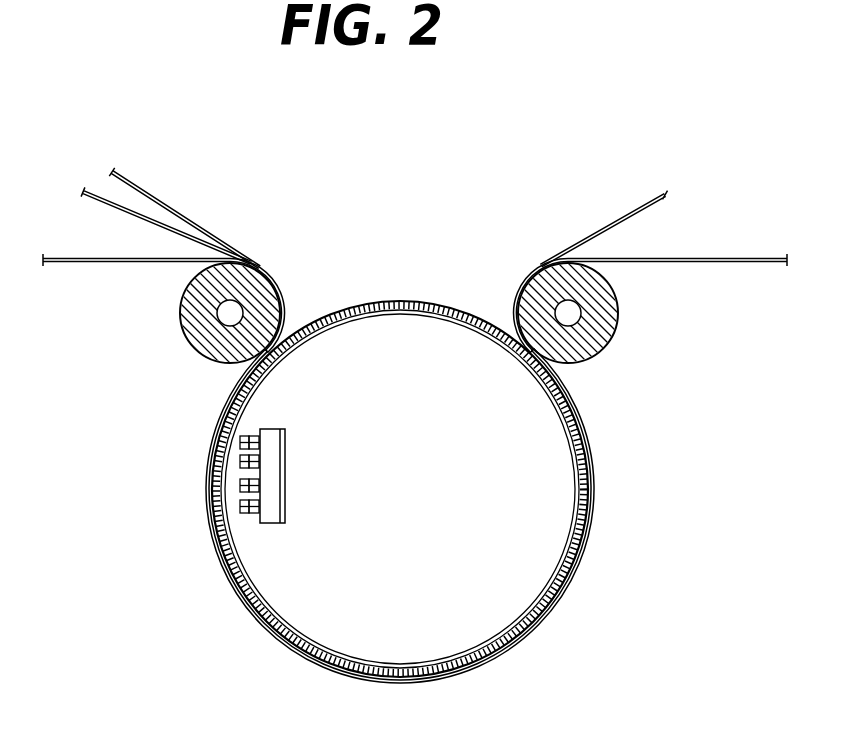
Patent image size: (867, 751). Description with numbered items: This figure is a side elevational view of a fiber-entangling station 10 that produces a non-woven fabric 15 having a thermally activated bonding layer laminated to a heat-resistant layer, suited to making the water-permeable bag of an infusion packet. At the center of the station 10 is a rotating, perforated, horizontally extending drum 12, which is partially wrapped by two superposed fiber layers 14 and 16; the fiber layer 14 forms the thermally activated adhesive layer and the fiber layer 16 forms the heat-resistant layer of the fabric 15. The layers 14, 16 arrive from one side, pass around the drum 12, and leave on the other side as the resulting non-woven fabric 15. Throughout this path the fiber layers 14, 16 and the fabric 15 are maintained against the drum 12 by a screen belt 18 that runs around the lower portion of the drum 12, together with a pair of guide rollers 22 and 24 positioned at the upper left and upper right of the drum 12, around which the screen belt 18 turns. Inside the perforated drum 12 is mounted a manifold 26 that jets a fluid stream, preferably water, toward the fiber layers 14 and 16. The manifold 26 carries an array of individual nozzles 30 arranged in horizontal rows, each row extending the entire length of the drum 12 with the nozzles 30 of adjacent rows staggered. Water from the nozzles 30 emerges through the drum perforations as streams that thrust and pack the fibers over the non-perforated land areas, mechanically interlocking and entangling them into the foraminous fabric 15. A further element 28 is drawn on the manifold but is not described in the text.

The fiber-entangling station 10 is at (360, 254).
The drum 12 is at (402, 300).
The fiber layer 14 is at (195, 228).
The non-woven fabric 15 is at (587, 233).
The fiber layer 16 is at (92, 197).
The screen belt 18 is at (125, 263).
The guide roller 22 is at (603, 335).
The guide roller 24 is at (193, 338).
The manifold 26 is at (280, 430).
The head base plate 28 is at (268, 513).
The nozzles 30 is at (243, 432).